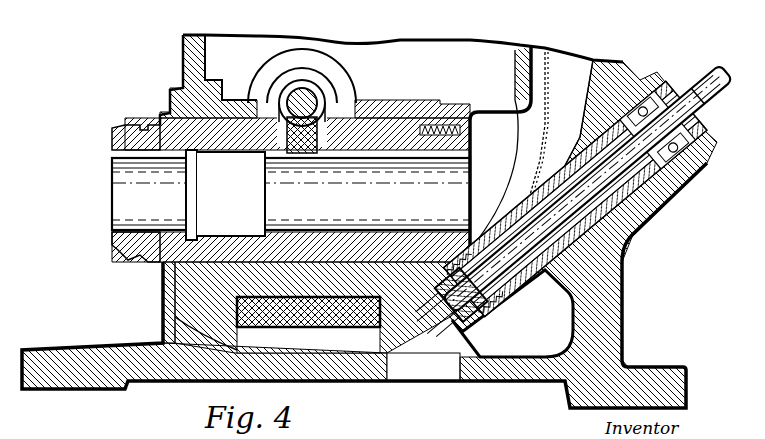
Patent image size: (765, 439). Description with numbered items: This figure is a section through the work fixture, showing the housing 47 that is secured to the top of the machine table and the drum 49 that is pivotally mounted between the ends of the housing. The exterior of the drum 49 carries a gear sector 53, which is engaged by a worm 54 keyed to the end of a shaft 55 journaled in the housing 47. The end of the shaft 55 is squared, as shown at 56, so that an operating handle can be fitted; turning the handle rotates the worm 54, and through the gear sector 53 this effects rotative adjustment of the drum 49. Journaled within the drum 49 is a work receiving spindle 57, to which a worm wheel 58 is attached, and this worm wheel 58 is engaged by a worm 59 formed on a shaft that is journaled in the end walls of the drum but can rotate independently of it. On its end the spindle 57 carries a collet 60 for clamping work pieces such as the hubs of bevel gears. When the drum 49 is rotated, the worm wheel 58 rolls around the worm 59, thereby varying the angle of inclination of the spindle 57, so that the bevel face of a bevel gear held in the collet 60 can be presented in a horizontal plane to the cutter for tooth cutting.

The housing 47 is at (622, 285).
The drum 49 is at (523, 50).
The gear sector 53 is at (548, 97).
The worm 54 is at (497, 320).
The shaft 55 is at (645, 194).
The squared end 56 is at (696, 75).
The work receiving spindle 57 is at (123, 190).
The worm wheel 58 is at (330, 107).
The worm 59 is at (308, 88).
The collet 60 is at (125, 137).